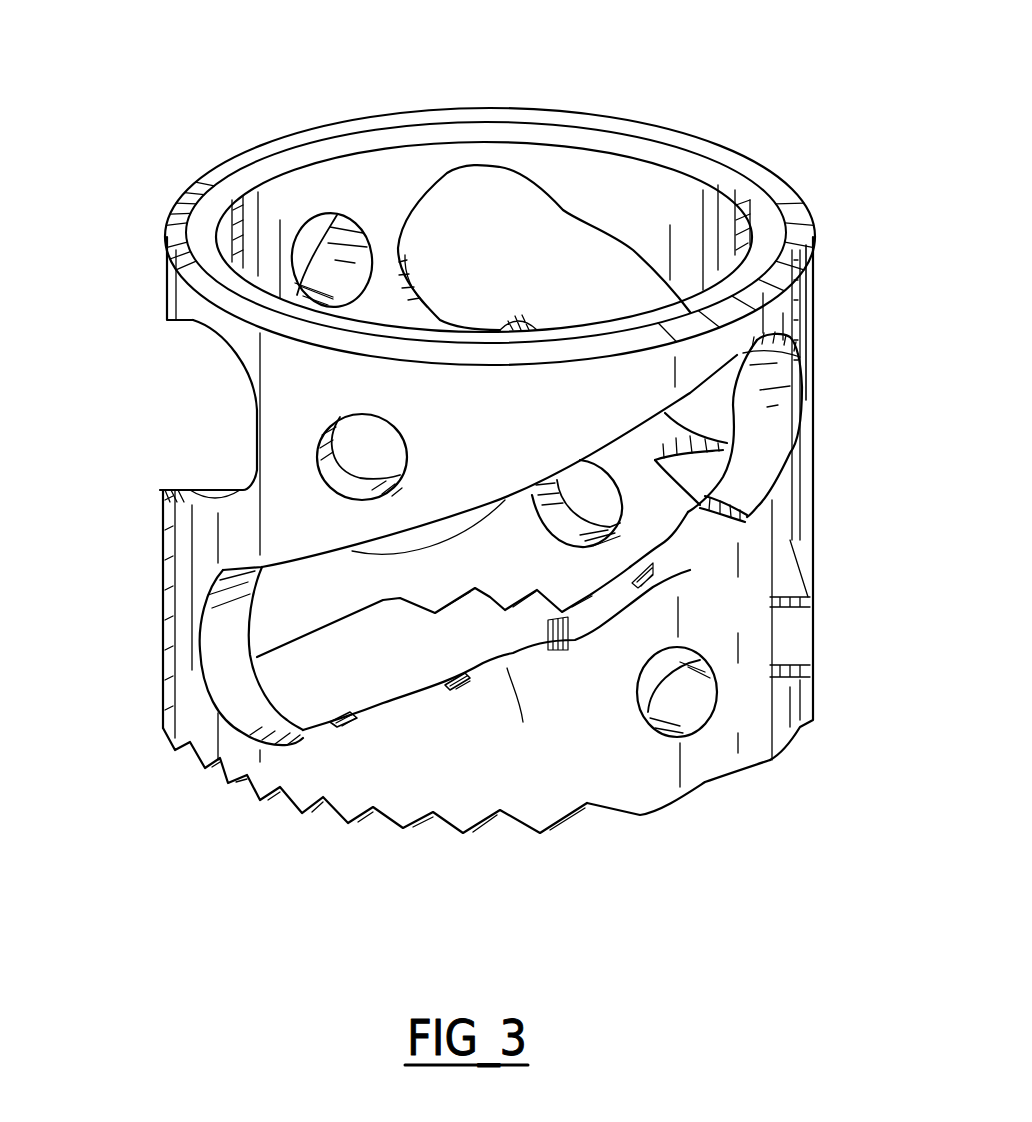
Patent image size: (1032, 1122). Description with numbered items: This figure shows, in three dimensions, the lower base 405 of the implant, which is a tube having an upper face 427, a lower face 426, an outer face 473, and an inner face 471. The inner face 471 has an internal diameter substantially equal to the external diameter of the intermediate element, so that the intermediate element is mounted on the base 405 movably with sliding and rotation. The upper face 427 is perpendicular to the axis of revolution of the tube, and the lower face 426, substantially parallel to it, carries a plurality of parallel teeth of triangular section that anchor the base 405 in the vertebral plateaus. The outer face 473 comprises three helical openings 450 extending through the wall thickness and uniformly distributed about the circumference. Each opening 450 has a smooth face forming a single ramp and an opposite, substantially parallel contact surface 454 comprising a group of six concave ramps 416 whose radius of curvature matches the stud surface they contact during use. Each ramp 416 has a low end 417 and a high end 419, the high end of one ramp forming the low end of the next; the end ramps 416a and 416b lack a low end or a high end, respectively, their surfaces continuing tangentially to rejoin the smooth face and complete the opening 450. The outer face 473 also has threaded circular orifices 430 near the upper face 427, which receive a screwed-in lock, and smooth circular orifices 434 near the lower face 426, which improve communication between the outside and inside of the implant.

The lower base 405 is at (118, 756).
The upper face 427 is at (515, 112).
The inner face 471 is at (400, 166).
The opening 450 is at (547, 220).
The outer face 473 is at (788, 300).
The orifice 430 is at (386, 460).
The ramp 416 is at (592, 625).
The end ramp 416a is at (250, 735).
The end ramp 416b is at (761, 459).
The low end 417 is at (347, 715).
The high end 419 is at (456, 680).
The contact surface 454 is at (688, 553).
The orifice 434 is at (672, 707).
The lower face 426 is at (467, 832).